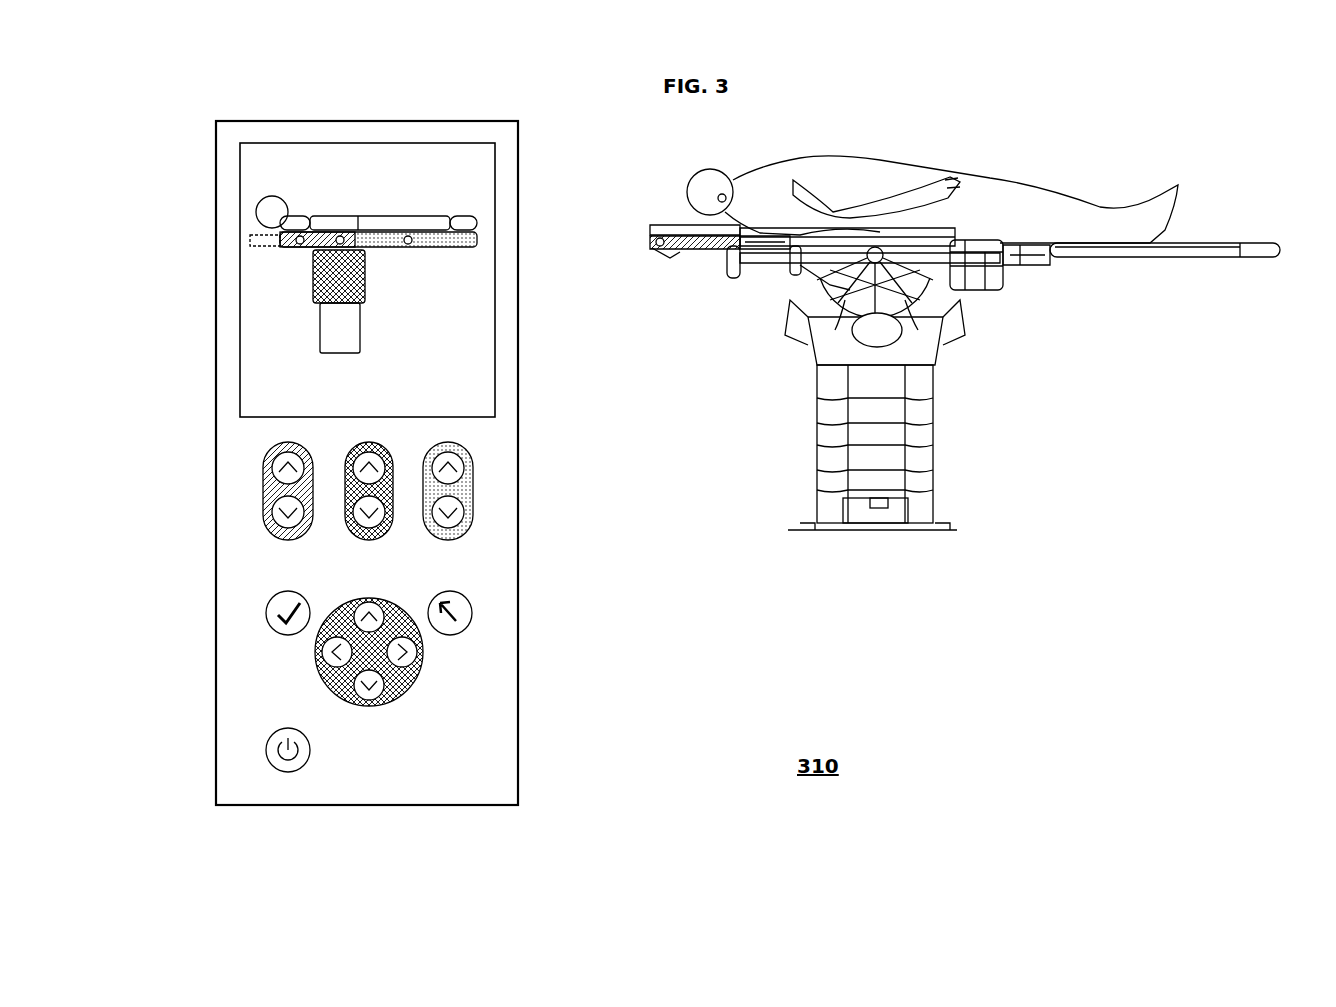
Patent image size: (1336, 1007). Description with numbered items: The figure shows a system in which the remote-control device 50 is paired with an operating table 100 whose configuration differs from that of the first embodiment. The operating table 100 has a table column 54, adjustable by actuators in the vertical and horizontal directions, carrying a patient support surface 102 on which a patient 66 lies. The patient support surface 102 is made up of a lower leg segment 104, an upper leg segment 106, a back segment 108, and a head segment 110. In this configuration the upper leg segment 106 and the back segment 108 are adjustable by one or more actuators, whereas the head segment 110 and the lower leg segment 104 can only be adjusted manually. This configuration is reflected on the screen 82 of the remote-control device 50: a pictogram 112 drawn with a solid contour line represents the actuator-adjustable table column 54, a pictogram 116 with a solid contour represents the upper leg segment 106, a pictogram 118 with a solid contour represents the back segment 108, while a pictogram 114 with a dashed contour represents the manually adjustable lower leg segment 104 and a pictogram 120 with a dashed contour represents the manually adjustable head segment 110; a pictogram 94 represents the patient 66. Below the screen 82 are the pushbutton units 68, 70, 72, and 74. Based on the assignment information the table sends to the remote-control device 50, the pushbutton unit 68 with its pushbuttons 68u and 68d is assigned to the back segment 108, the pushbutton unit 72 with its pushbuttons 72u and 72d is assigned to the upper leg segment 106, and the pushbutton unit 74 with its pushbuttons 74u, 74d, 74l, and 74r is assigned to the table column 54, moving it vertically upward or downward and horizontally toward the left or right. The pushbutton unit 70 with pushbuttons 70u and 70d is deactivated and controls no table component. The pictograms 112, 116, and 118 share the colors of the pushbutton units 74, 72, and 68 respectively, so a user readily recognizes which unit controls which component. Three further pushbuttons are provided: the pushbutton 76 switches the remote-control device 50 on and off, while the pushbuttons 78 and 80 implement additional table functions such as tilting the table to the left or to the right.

The remote-control device 50 is at (380, 119).
The screen 82 is at (458, 143).
The pictogram 94 is at (318, 206).
The pictogram 118 is at (305, 216).
The pictogram 116 is at (372, 230).
The pictogram 114 is at (447, 230).
The pictogram 120 is at (262, 246).
The pictogram 112 is at (372, 285).
The pushbutton unit 68 is at (234, 492).
The operating pushbutton 68u is at (268, 472).
The operating pushbutton 68d is at (268, 508).
The pushbutton unit 70 is at (369, 494).
The operating pushbutton 70u is at (348, 470).
The operating pushbutton 70d is at (348, 512).
The pushbutton unit 72 is at (503, 492).
The operating pushbutton 72u is at (468, 472).
The operating pushbutton 72d is at (468, 508).
The pushbutton unit 74 is at (370, 663).
The operating pushbutton 74u is at (369, 602).
The operating pushbutton 74d is at (369, 700).
The operating pushbutton 74l is at (333, 655).
The operating pushbutton 74r is at (408, 655).
The operating pushbutton 76 is at (266, 750).
The operating pushbutton 78 is at (266, 613).
The operating pushbutton 80 is at (472, 613).
The operating table 100 is at (1125, 153).
The patient 66 is at (852, 155).
The patient support surface 102 is at (1262, 243).
The lower leg segment 104 is at (1185, 240).
The upper leg segment 106 is at (1010, 290).
The back segment 108 is at (775, 265).
The head segment 110 is at (660, 252).
The table column 54 is at (935, 420).